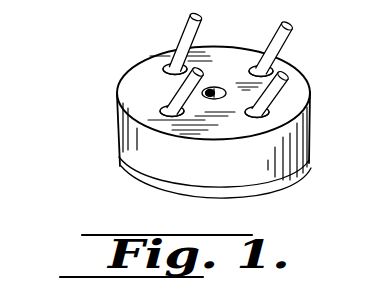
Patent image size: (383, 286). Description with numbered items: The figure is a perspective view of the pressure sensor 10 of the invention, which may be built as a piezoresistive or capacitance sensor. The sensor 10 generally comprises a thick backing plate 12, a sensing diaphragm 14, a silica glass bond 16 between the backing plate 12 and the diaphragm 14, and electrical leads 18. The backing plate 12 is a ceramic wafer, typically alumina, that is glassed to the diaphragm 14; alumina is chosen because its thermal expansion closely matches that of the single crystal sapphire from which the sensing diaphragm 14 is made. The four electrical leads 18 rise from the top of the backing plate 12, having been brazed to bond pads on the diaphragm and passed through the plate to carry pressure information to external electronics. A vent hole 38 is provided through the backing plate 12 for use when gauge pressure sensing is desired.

The sensor 10 is at (198, 115).
The backing plate 12 is at (309, 125).
The sensing diaphragm 14 is at (257, 194).
The silica glass bond 16 is at (184, 183).
The electrical leads 18 is at (284, 46).
The vent hole 38 is at (222, 87).